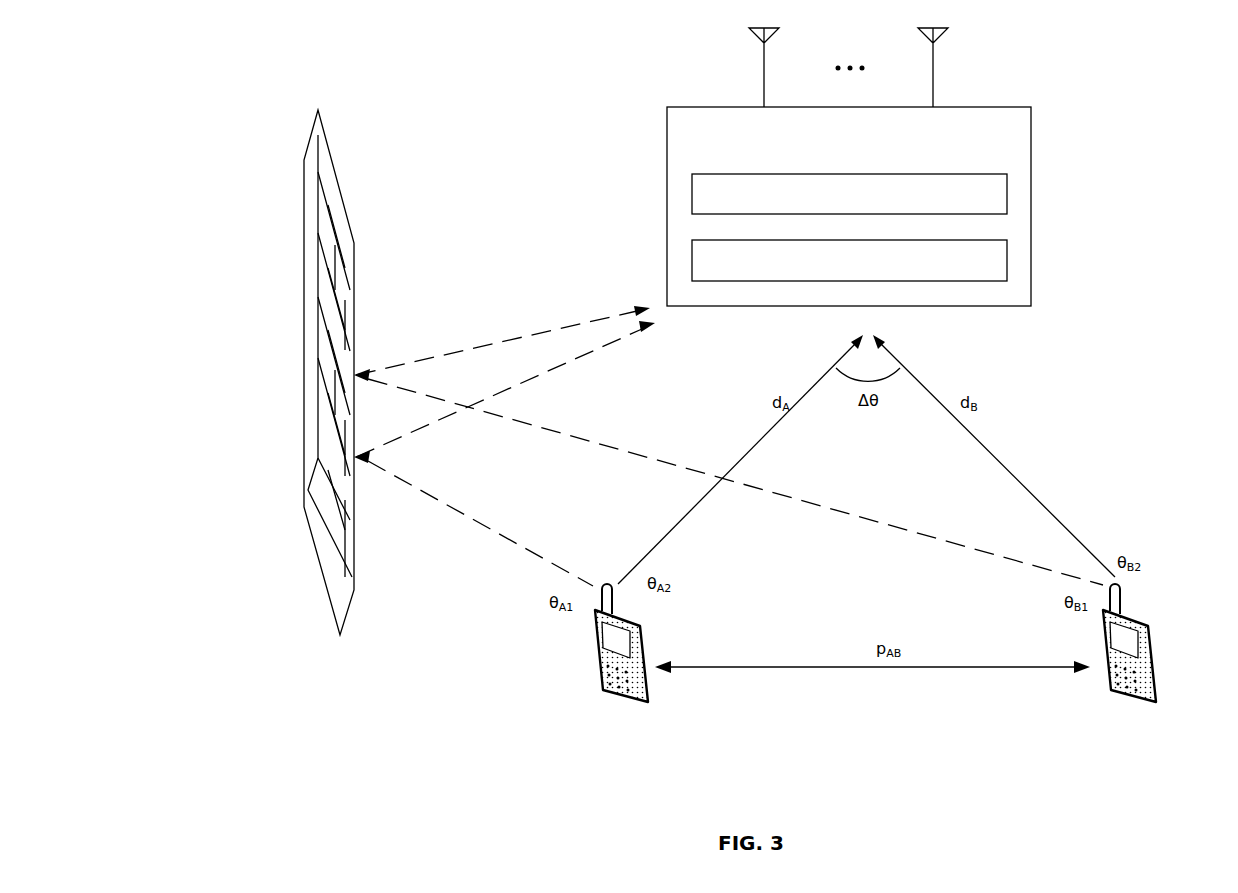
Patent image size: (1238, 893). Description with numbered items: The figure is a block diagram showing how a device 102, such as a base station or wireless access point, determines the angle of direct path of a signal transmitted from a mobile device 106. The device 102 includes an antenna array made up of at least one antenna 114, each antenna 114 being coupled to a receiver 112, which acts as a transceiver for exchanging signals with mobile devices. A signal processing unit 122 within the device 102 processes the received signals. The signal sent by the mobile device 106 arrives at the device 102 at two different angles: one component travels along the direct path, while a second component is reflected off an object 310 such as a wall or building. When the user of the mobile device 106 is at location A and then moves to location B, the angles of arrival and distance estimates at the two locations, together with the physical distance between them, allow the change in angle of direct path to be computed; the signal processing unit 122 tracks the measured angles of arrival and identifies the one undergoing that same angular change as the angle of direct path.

The device 102 is at (849, 206).
The receiver 112 is at (849, 194).
The signal processing unit 122 is at (849, 260).
The antenna 114 is at (764, 86).
The mobile device 106 is at (646, 632).
The object 310 is at (340, 636).